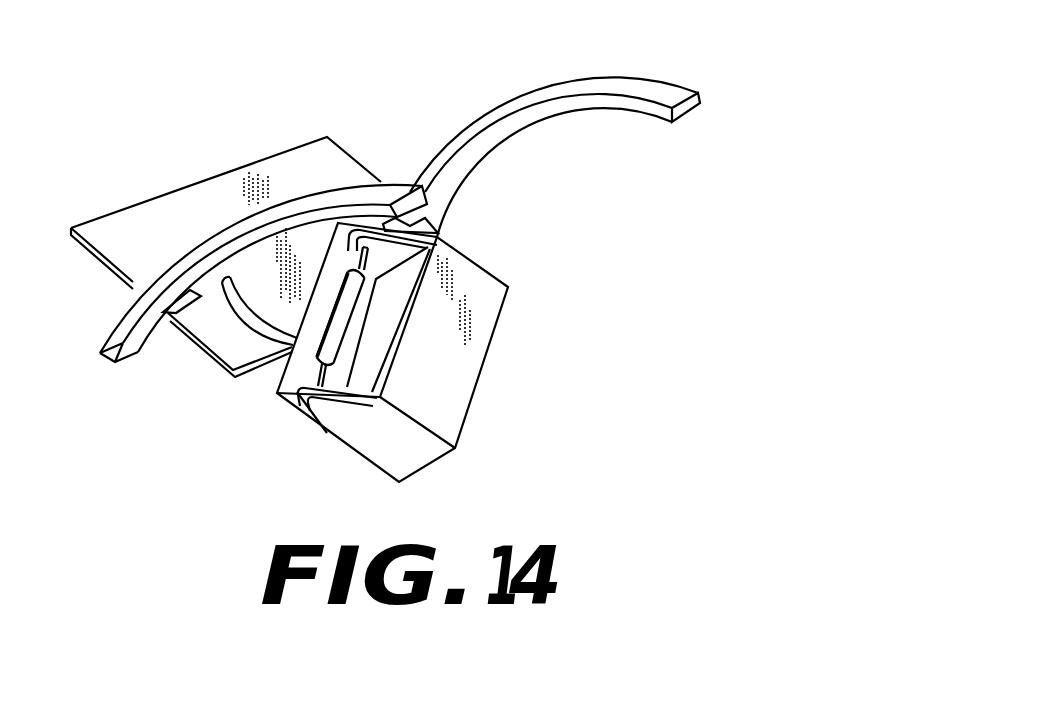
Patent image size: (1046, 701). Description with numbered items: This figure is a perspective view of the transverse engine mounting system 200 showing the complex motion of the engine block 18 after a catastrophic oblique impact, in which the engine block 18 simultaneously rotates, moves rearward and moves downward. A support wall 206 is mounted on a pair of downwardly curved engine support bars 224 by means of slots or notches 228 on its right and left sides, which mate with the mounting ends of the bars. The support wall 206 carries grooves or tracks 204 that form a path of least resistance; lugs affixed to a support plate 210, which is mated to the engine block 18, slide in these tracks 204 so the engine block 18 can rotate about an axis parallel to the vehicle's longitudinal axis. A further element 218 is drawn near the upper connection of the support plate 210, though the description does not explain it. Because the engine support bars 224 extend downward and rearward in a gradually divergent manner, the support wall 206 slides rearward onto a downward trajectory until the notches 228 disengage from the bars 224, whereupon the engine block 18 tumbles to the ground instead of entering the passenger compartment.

The engine block 18 is at (452, 388).
The transverse engine mounting system 200 is at (688, 183).
The grooves or tracks 204 is at (262, 325).
The support wall 206 is at (173, 218).
The support plate 210 is at (287, 398).
The upper clip 218 is at (348, 247).
The engine support bars 224 is at (655, 92).
The slots or notches 228 is at (196, 310).